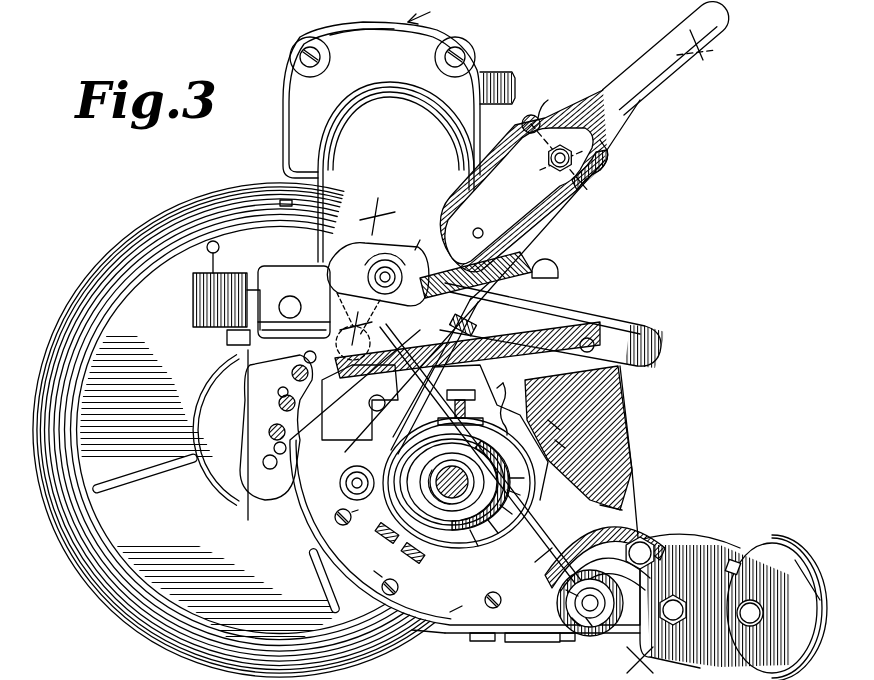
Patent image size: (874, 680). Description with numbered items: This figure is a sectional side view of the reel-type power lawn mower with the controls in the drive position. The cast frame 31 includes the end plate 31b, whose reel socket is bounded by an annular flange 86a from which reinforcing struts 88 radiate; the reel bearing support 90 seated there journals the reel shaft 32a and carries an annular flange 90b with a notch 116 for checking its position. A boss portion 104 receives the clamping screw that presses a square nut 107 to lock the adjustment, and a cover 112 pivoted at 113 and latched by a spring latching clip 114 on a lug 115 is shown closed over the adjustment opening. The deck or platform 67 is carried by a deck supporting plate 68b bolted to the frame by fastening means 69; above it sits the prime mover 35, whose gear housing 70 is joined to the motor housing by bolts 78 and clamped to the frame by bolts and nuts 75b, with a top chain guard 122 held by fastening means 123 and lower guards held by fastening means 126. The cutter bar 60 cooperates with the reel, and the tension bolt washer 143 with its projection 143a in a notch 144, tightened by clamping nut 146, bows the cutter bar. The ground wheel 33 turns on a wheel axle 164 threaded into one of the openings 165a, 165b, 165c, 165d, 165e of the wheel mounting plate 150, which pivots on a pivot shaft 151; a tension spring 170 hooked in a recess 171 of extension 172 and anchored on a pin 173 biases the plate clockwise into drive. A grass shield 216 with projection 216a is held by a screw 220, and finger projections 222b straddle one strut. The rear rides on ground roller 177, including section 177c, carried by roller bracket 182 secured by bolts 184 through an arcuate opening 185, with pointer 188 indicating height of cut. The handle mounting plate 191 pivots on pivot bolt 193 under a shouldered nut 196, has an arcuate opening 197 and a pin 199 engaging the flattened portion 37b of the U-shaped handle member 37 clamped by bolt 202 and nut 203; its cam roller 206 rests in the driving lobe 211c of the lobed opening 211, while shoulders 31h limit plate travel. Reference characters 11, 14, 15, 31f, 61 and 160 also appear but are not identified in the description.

The lever 11 is at (488, 463).
The section line 14 is at (489, 540).
The section line 15 is at (371, 266).
The frame 31 is at (450, 630).
The end plate 31b is at (430, 635).
The plate flange 31f is at (542, 643).
The shoulders 31h is at (360, 402).
The reel shaft 32a is at (515, 415).
The ground wheel 33 is at (193, 202).
The prime mover 35 is at (426, 12).
The handle member 37 is at (672, 70).
The flattened portion of handle member 37b is at (572, 200).
The cutter bar 60 is at (484, 641).
The bracket 61 is at (520, 642).
The platform 67 is at (575, 303).
The deck supporting plate 68b is at (625, 405).
The fastening means 69 is at (628, 462).
The gear housing 70 is at (352, 45).
The nuts 75b is at (227, 338).
The bolts 78 is at (308, 48).
The annular flange 86a is at (467, 600).
The reinforcing struts 88 is at (380, 575).
The reel bearing support 90 is at (485, 556).
The annular flange 90b is at (366, 517).
The boss portion 104 is at (505, 352).
The square nut 107 is at (468, 385).
The cover 112 is at (555, 432).
The pivot 113 is at (556, 445).
The spring latching clip 114 is at (500, 390).
The lug 115 is at (508, 400).
The notch 116 is at (440, 448).
The top chain guard 122 is at (402, 95).
The fastening means 123 is at (285, 200).
The fastening means 126 is at (345, 525).
The tension bolt washer 143 is at (600, 632).
The projection 143a is at (554, 593).
The notch 144 is at (575, 622).
The clamping nut 146 is at (588, 622).
The wheel mounting plate 150 is at (300, 272).
The pivot shaft 151 is at (294, 338).
The spoke 160 is at (95, 588).
The wheel axle 164 is at (269, 432).
The tapped opening 165a is at (268, 469).
The tapped opening 165b is at (274, 448).
The tapped opening 165c is at (278, 392).
The tapped opening 165d is at (292, 373).
The tapped opening 165e is at (304, 357).
The tension spring 170 is at (470, 330).
The recess 171 is at (455, 308).
The extension 172 is at (480, 312).
The pin 173 is at (350, 487).
The ground roller 177 is at (758, 538).
The roller section 177c is at (792, 557).
The roller bracket 182 is at (705, 548).
The bolts 184 is at (675, 606).
The elongated arcuate opening 185 is at (610, 522).
The pointer 188 is at (665, 535).
The handle mounting plate 191 is at (558, 101).
The pivot bolt 193 is at (340, 337).
The shouldered nut 196 is at (303, 307).
The elongated arcuate opening 197 is at (522, 124).
The pin 199 is at (480, 235).
The bolt 202 is at (565, 148).
The nut 203 is at (608, 152).
The cam roller 206 is at (375, 258).
The lobed opening 211 is at (440, 285).
The driving lobe 211c is at (432, 239).
The grass shield 216 is at (163, 567).
The projection 216a is at (279, 404).
The screw 220 is at (260, 360).
The finger projections 222b is at (388, 541).